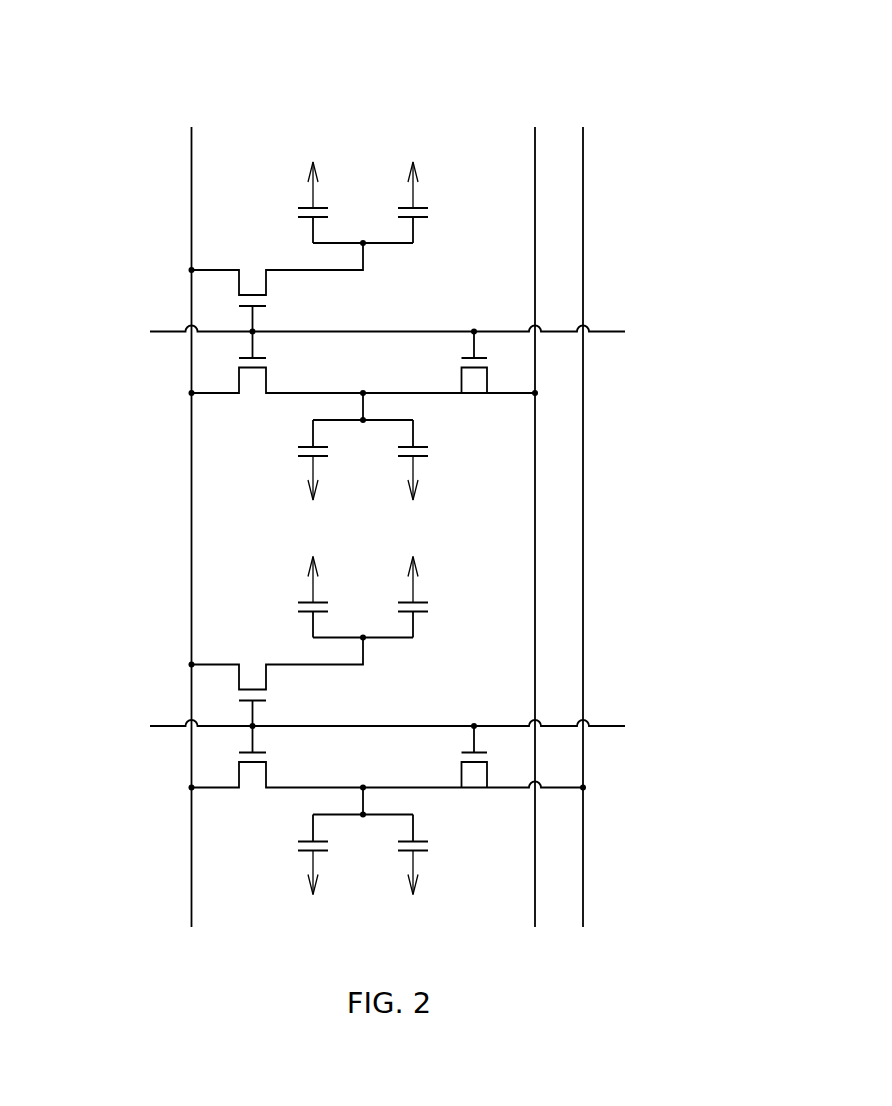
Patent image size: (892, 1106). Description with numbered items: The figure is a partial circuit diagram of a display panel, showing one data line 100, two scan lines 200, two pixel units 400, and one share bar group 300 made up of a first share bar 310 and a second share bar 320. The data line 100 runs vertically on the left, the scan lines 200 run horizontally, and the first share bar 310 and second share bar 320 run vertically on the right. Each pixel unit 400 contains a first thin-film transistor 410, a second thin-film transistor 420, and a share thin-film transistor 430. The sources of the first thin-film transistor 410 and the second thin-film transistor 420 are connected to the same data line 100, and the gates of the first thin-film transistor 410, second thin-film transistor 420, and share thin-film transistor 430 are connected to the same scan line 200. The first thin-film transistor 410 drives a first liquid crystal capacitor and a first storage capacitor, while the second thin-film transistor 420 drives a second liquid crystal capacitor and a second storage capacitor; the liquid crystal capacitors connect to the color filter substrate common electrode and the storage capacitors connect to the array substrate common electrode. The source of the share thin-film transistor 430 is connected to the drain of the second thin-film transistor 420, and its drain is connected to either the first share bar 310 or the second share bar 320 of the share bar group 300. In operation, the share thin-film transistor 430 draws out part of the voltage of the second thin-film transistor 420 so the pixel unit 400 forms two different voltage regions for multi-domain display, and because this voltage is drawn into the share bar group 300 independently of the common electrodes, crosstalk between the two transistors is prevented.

The data line 100 is at (191, 150).
The scan line 200 is at (163, 332).
The share bar group 300 is at (576, 466).
The first share bar 310 is at (535, 153).
The second share bar 320 is at (583, 210).
The pixel unit 400 is at (373, 528).
The first thin-film transistor 410 is at (212, 290).
The second thin-film transistor 420 is at (247, 416).
The share thin-film transistor 430 is at (516, 358).